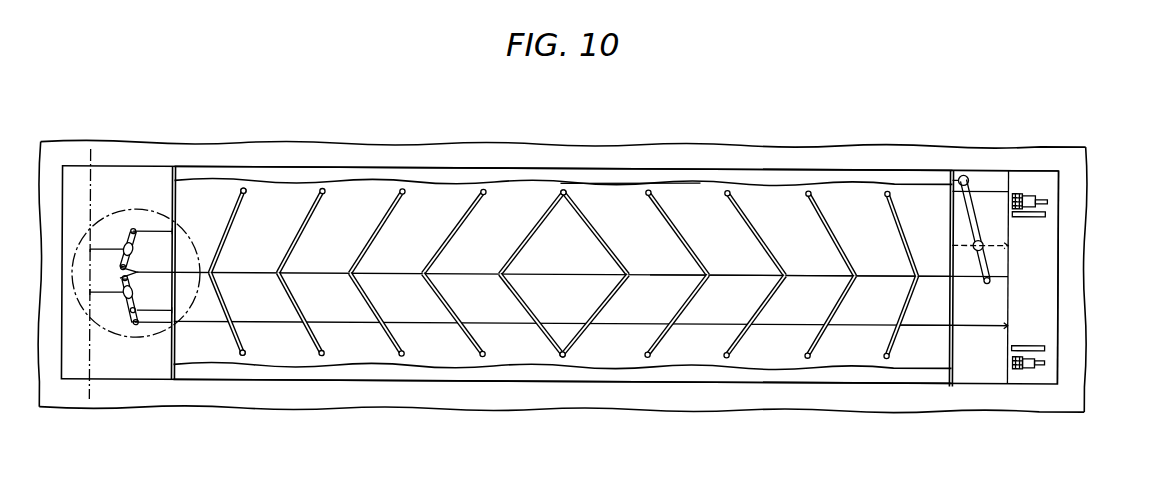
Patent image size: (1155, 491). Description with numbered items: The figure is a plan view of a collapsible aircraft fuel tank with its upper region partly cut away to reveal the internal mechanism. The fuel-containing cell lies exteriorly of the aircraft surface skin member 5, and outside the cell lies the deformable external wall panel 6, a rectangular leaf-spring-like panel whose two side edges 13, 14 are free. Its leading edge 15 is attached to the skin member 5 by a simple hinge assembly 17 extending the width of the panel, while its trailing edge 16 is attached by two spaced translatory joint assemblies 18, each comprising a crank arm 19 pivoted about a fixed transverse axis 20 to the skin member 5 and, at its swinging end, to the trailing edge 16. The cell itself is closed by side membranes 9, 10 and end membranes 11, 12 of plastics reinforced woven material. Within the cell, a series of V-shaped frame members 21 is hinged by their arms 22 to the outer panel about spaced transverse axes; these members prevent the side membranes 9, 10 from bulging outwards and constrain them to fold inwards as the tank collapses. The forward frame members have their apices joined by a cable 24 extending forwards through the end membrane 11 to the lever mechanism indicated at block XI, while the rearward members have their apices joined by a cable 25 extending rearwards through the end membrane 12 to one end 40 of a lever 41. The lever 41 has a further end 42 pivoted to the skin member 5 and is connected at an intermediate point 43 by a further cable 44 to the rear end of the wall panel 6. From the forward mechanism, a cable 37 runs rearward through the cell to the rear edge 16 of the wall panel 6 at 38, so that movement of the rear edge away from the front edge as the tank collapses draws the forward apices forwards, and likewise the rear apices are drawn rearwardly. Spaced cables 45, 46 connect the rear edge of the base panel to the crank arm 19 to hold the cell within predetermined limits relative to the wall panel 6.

The surface skin member 5 is at (74, 398).
The deformable external wall panel 6 is at (593, 181).
The side membrane 9 is at (458, 181).
The side membrane 10 is at (492, 373).
The end membrane 11 is at (170, 350).
The end membrane 12 is at (955, 382).
The side edge 13 is at (410, 168).
The side edge 14 is at (400, 382).
The leading edge 15 is at (108, 177).
The trailing edge 16 is at (1018, 170).
The hinge assembly 17 is at (86, 172).
The translatory joint assembly 18 is at (1054, 184).
The crank arm 19 is at (1030, 211).
The fixed transverse axis 20 is at (1020, 190).
The V-shaped frame member 21 is at (243, 196).
The arm 22 is at (248, 200).
The cable 24 is at (325, 272).
The cable 25 is at (727, 275).
The cable 37 is at (625, 323).
The connection point 38 is at (1009, 322).
The lever end 40 is at (990, 278).
The lever 41 is at (985, 256).
The lever end 42 is at (968, 172).
The intermediate point 43 is at (973, 240).
The cable 44 is at (995, 240).
The cable 45 is at (983, 188).
The cable 46 is at (992, 367).
The block XI is at (127, 348).